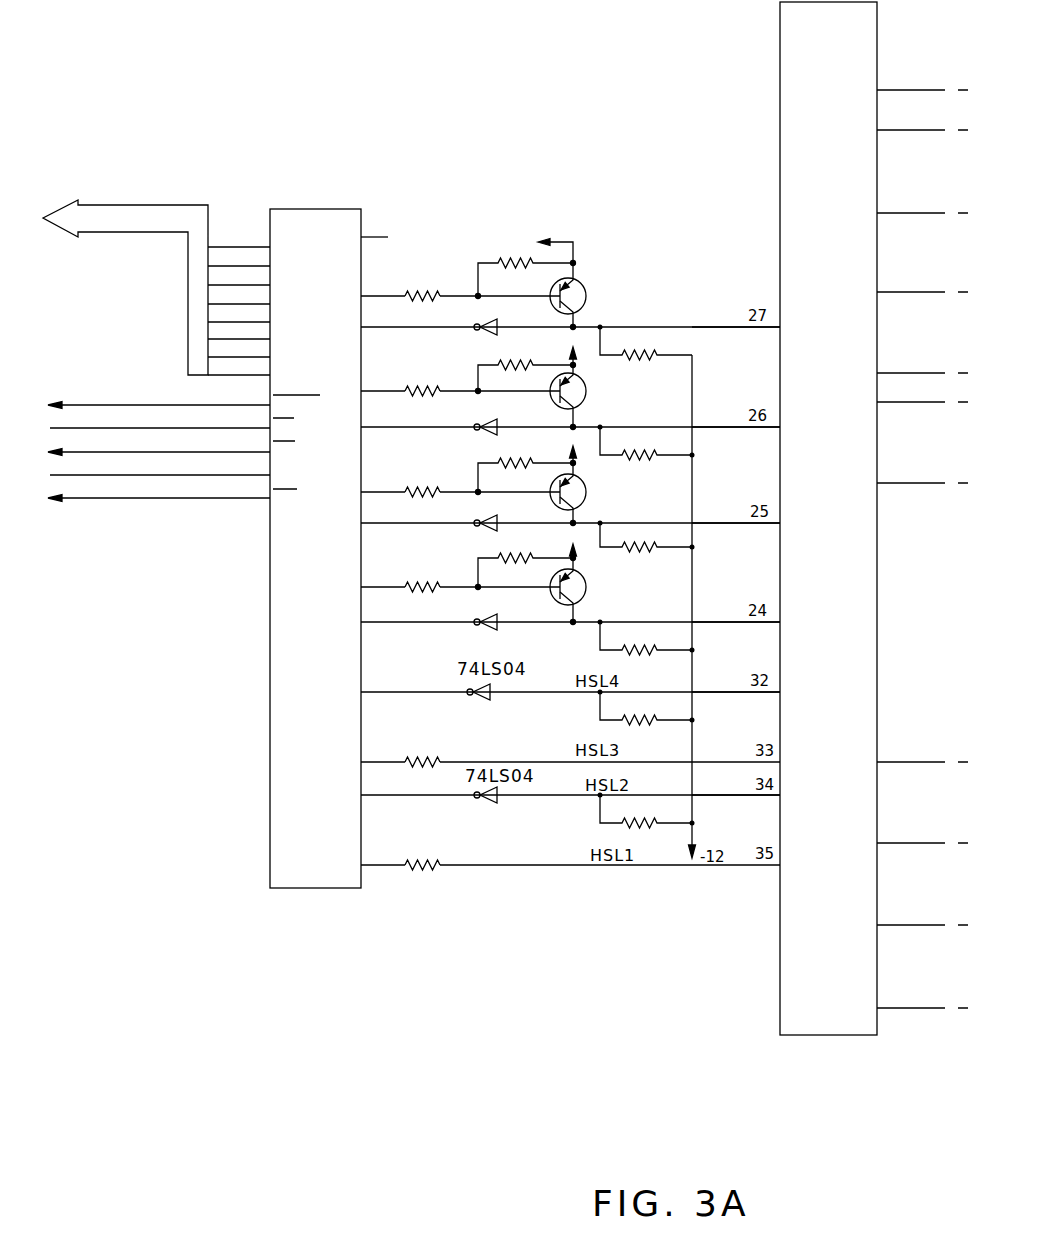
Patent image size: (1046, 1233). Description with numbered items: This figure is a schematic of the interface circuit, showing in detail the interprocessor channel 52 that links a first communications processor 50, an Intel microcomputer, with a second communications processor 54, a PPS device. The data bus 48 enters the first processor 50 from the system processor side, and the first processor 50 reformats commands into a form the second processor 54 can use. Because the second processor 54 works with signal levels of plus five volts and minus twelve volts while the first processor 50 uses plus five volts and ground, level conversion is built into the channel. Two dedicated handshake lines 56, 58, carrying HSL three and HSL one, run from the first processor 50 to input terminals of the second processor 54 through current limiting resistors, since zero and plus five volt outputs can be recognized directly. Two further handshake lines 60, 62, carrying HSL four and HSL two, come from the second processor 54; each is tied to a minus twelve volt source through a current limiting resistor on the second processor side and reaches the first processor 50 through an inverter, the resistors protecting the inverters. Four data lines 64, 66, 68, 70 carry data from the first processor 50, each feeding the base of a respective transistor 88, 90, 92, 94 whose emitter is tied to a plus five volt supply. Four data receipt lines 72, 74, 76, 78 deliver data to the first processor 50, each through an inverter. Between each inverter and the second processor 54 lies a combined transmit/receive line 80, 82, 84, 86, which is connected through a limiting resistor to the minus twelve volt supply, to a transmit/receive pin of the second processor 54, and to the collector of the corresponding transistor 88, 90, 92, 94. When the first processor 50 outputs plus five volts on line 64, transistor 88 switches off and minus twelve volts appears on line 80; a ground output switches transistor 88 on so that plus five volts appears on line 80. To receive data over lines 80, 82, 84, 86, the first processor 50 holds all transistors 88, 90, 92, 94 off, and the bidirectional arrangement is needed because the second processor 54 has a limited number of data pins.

The data bus 48 is at (125, 232).
The first communications processor 50 is at (308, 209).
The interprocessor channel 52 is at (535, 195).
The second communications processor 54 is at (780, 70).
The handshake line 56 is at (458, 760).
The handshake line 58 is at (452, 864).
The handshake line 60 is at (717, 691).
The handshake line 62 is at (722, 784).
The data line 64 is at (402, 293).
The data line 66 is at (404, 390).
The data line 68 is at (403, 490).
The data line 70 is at (396, 586).
The data receipt line 72 is at (418, 331).
The data receipt line 74 is at (441, 432).
The data receipt line 76 is at (403, 526).
The data receipt line 78 is at (401, 626).
The transmit/receive line 80 is at (698, 322).
The transmit/receive line 82 is at (713, 425).
The transmit/receive line 84 is at (712, 522).
The transmit/receive line 86 is at (714, 621).
The transistor 88 is at (587, 295).
The transistor 90 is at (585, 383).
The transistor 92 is at (584, 494).
The transistor 94 is at (587, 585).